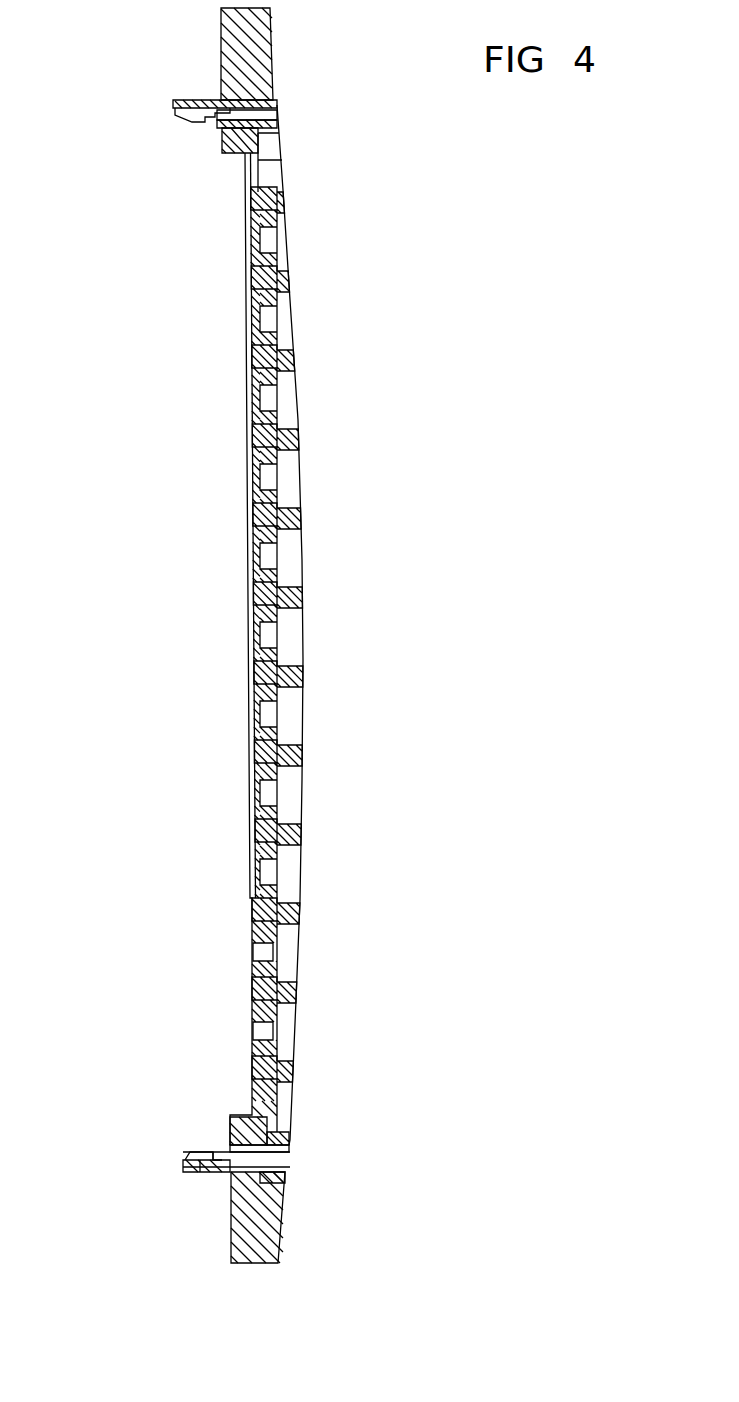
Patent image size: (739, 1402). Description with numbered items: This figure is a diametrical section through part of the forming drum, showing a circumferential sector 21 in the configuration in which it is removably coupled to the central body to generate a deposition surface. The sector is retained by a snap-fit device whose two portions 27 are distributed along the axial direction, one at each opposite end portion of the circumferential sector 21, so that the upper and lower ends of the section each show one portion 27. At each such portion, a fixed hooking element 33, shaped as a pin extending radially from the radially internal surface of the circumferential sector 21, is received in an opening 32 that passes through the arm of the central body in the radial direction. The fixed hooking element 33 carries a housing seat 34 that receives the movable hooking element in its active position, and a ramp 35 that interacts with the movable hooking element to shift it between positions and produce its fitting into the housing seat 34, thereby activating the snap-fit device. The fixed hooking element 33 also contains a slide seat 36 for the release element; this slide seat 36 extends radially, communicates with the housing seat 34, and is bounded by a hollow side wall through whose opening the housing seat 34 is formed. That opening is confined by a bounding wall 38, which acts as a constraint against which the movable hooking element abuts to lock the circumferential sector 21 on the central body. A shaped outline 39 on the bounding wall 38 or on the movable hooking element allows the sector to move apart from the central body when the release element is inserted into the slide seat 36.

The circumferential sector 21 is at (302, 243).
The portion of the snap-fit device 27 is at (214, 147).
The opening 32 is at (218, 1152).
The fixed hooking element 33 is at (287, 1172).
The housing seat 34 is at (217, 1170).
The ramp 35 is at (193, 1153).
The slide seat 36 is at (270, 1158).
The bounding wall 38 is at (218, 1153).
The shaped outline 39 is at (203, 1158).